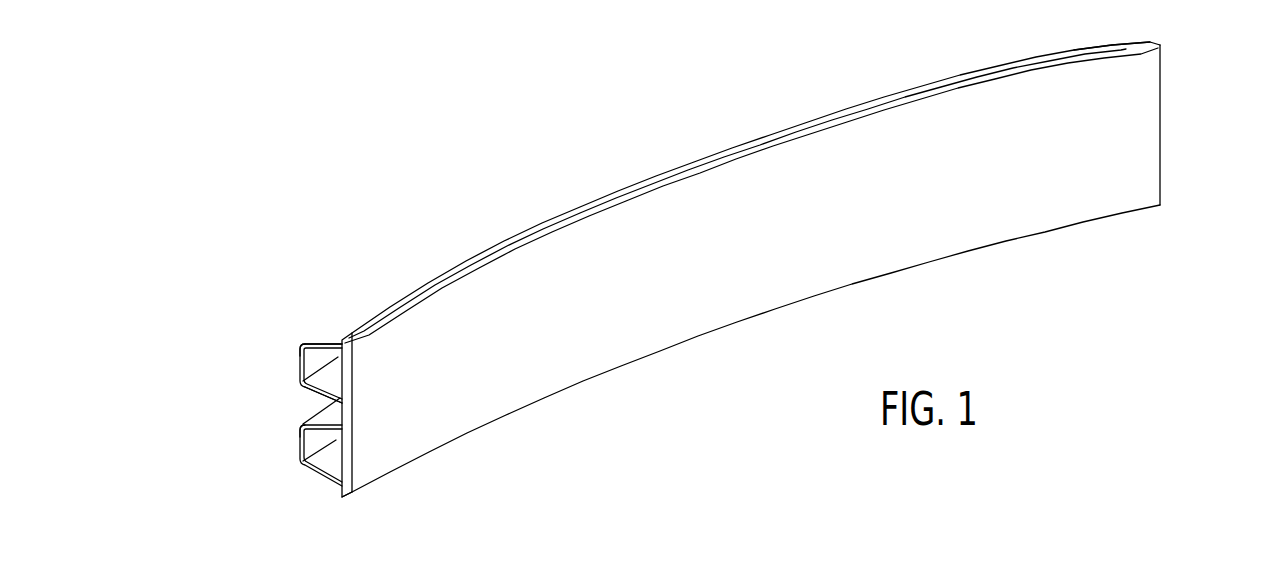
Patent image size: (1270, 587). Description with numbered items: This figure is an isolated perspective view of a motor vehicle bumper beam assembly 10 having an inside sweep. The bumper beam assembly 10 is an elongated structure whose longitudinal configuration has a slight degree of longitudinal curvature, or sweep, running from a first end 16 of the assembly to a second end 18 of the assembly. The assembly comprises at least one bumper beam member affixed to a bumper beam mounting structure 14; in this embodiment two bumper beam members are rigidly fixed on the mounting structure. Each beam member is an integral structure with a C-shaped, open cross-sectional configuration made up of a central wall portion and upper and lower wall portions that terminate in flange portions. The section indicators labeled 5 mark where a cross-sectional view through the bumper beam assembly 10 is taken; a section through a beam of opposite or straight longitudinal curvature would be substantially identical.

The bumper beam assembly 10 is at (1050, 265).
The bumper beam mounting structure 14 is at (1128, 167).
The first end 16 is at (337, 490).
The second end 18 is at (1160, 127).
The section line 5- 5 is at (695, 118).